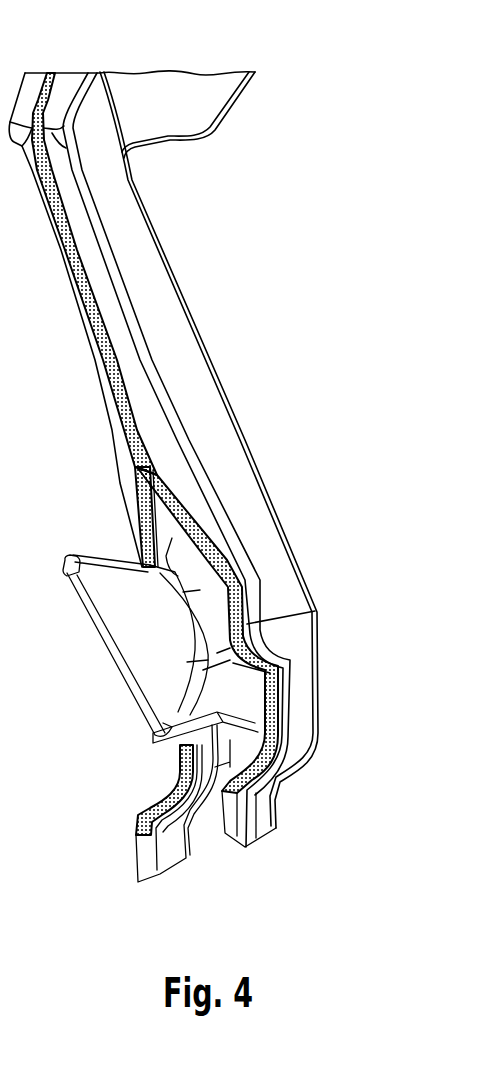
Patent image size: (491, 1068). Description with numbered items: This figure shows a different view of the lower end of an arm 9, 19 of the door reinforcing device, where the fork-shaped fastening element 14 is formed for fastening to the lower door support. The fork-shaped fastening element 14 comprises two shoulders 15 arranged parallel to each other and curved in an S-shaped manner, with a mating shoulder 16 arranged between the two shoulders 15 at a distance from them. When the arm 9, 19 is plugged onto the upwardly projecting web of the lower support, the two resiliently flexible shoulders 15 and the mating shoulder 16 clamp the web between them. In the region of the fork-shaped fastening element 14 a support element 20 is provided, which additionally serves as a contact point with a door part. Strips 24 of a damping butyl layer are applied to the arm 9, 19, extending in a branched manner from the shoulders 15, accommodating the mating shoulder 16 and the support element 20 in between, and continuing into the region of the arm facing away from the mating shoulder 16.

The arm 9 is at (74, 80).
The arm 19 is at (205, 386).
The fork-shaped fastening element 14 is at (212, 847).
The shoulder 15 is at (173, 820).
The mating shoulder 16 is at (167, 733).
The support element 20 is at (125, 613).
The strip of butyl layer 24 is at (107, 367).